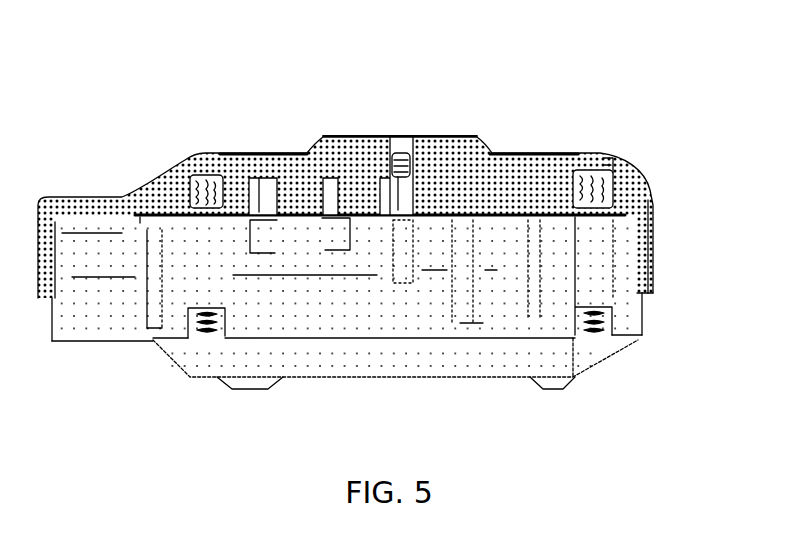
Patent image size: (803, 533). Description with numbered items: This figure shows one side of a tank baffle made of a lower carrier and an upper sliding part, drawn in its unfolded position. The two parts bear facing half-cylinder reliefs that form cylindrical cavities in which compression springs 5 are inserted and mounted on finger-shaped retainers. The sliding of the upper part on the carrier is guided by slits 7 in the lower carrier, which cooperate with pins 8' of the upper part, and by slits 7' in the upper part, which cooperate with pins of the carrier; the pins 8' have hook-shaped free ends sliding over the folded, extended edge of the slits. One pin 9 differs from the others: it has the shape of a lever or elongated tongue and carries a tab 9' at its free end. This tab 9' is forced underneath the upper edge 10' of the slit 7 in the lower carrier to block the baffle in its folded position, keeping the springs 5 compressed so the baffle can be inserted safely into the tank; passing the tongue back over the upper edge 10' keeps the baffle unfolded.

The compression spring 5 is at (203, 338).
The slit 7 is at (306, 228).
The slit 7' is at (293, 118).
The pin 8' is at (336, 148).
The pin 9 is at (433, 116).
The tab 9' is at (410, 115).
The upper edge 10' is at (458, 152).